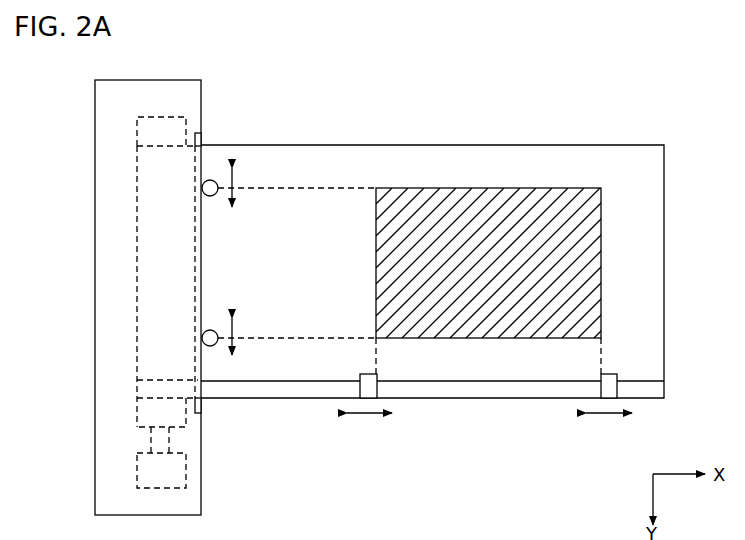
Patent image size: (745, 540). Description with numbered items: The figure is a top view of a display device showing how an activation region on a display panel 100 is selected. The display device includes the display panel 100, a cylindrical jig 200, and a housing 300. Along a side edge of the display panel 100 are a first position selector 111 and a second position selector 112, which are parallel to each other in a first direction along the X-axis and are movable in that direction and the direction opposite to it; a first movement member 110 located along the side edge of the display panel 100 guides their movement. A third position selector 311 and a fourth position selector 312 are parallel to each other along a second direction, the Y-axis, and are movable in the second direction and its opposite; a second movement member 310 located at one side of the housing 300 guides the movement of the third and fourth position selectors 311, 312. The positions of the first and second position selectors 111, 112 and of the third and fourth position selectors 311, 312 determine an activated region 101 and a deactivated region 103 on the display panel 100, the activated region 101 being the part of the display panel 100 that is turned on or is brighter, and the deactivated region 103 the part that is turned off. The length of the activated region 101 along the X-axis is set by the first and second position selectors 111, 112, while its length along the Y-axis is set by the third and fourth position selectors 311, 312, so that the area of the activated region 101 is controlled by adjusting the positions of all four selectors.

The display panel 100 is at (588, 130).
The activated region 101 is at (507, 197).
The deactivated region 103 is at (421, 158).
The first movement member 110 is at (492, 393).
The first position selector 111 is at (366, 398).
The second position selector 112 is at (606, 390).
The cylindrical jig 200 is at (186, 472).
The housing 300 is at (214, 76).
The second movement member 310 is at (197, 133).
The third position selector 311 is at (213, 181).
The fourth position selector 312 is at (210, 346).